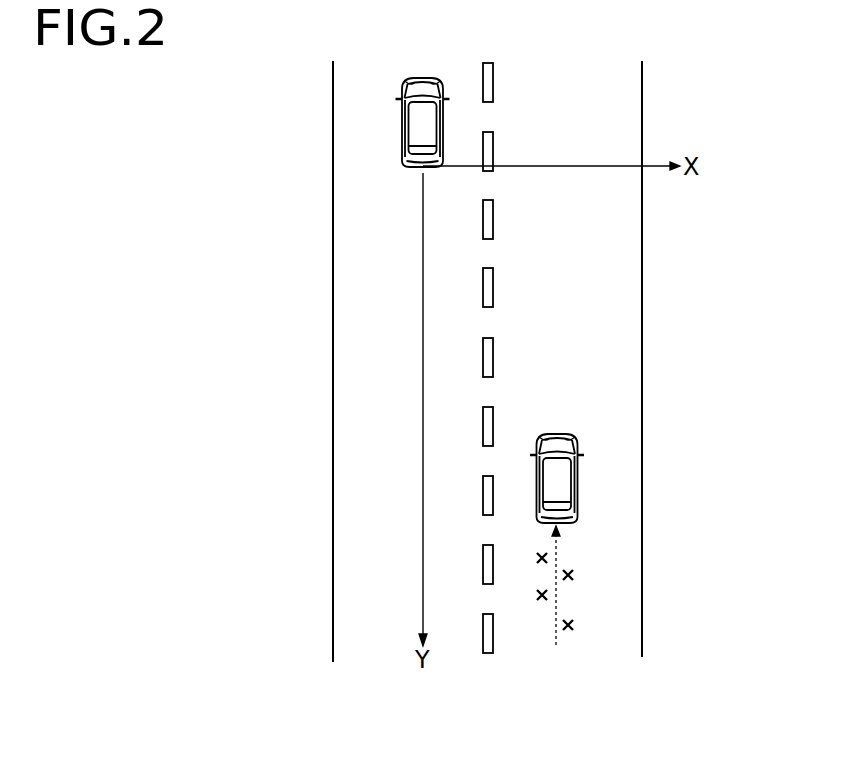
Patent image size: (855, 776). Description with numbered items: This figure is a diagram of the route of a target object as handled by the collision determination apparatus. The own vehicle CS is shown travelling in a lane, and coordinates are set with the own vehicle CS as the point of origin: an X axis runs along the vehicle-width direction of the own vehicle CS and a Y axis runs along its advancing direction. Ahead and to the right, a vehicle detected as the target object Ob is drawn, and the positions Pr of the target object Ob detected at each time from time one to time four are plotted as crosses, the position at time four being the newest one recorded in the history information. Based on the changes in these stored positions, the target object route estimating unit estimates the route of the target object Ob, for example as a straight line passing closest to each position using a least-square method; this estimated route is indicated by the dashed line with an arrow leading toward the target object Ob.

The own vehicle CS is at (402, 128).
The target object Ob is at (580, 470).